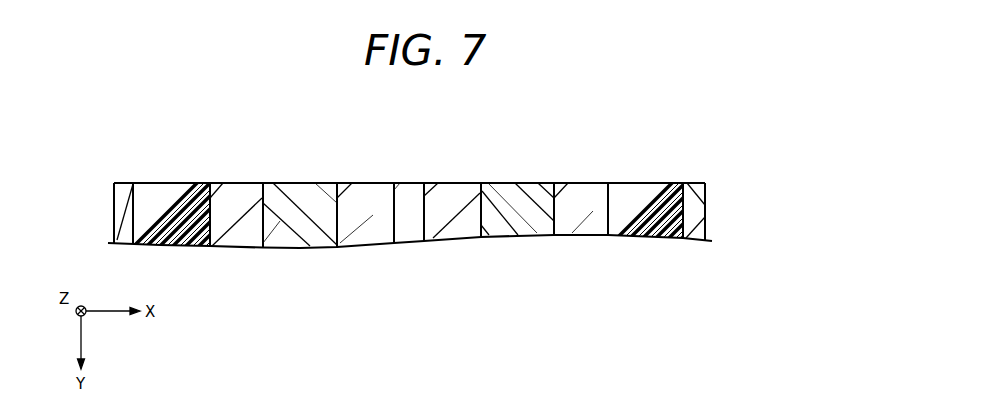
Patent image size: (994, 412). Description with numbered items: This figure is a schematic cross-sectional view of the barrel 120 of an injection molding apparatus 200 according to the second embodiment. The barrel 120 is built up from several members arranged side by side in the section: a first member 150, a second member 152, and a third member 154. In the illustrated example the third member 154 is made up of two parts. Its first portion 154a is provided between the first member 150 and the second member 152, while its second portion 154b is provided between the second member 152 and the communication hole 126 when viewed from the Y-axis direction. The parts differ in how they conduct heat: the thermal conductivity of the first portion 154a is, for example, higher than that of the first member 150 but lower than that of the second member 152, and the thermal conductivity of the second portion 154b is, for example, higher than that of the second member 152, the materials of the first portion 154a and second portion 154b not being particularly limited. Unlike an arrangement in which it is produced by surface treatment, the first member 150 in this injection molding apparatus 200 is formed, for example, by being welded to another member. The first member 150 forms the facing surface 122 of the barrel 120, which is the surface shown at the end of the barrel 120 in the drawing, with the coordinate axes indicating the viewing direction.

The injection molding apparatus 200 is at (735, 100).
The barrel 120 is at (680, 152).
The facing surface 122 is at (162, 184).
The communication hole 126 is at (423, 205).
The first member 150 is at (185, 183).
The second member 152 is at (308, 215).
The third member 154 is at (583, 215).
The first portion 154a is at (244, 215).
The second portion 154b is at (372, 215).